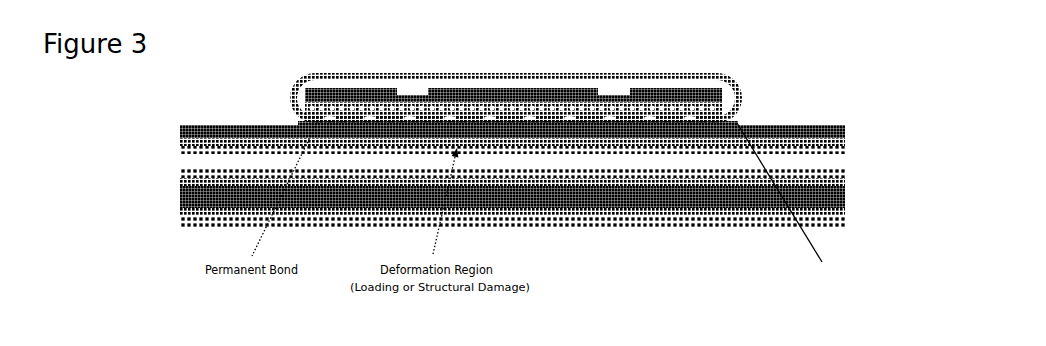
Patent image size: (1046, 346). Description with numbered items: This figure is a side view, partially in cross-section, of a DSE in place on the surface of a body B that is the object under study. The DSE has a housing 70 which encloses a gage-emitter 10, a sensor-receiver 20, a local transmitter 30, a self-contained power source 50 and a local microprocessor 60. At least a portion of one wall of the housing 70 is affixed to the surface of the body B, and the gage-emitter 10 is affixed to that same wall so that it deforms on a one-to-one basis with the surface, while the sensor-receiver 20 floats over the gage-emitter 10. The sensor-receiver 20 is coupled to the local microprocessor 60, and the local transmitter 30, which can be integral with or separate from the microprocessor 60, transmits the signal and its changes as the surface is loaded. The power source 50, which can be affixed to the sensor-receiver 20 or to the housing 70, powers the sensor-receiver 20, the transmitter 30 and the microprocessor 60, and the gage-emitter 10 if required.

The gage-emitter 10 is at (578, 112).
The sensor-receiver 20 is at (672, 112).
The local transmitter 30 is at (505, 87).
The self-contained power source 50 is at (347, 88).
The local microprocessor 60 is at (676, 88).
The housing 70 is at (290, 105).
The body B is at (182, 186).
The deformation sensing element DSE is at (516, 70).